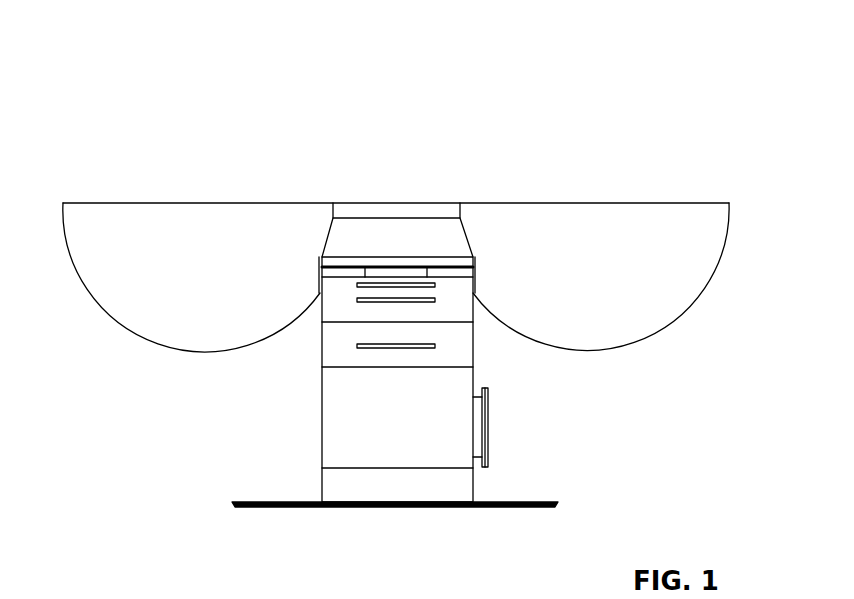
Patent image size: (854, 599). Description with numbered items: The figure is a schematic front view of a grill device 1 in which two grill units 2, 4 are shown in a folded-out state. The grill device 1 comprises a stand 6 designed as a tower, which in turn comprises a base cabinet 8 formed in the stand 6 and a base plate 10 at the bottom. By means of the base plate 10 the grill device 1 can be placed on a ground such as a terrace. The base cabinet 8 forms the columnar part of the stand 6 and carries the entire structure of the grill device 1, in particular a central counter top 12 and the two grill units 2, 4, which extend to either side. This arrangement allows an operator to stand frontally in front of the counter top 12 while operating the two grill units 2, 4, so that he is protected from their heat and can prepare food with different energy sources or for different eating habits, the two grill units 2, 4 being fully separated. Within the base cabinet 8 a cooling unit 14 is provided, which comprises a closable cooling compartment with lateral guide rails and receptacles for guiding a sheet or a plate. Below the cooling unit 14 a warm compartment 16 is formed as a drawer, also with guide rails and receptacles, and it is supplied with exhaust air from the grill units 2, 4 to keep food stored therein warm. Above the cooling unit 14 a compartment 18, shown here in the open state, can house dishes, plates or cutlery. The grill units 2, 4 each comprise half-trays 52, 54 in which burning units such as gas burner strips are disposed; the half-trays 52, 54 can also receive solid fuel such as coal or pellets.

The grill device 1 is at (500, 92).
The grill unit 2 is at (191, 248).
The grill unit 4 is at (601, 248).
The stand 6 is at (405, 379).
The base cabinet 8 is at (472, 378).
The base plate 10 is at (520, 497).
The central counter top 12 is at (393, 195).
The cooling unit 14 is at (347, 305).
The warm compartment 16 is at (347, 348).
The compartment 18 is at (368, 251).
The half-tray 52 is at (129, 284).
The half-tray 54 is at (637, 281).